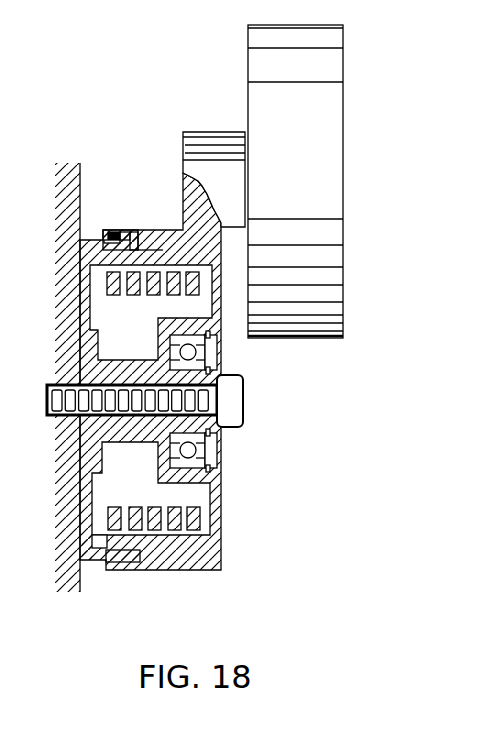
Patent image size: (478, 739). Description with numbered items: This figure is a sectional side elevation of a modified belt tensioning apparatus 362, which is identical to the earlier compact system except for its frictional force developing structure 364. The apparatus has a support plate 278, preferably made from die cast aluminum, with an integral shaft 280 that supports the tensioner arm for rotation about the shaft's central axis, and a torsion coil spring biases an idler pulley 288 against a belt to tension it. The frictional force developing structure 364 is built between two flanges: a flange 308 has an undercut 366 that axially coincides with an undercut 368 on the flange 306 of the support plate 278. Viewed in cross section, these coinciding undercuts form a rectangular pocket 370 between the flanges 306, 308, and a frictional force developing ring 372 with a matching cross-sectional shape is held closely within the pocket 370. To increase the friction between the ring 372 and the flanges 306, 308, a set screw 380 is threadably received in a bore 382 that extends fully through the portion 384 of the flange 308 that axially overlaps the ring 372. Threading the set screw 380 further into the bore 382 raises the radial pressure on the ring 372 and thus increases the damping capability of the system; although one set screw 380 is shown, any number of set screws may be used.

The support plate 278 is at (79, 460).
The shaft 280 is at (125, 378).
The idler pulley 288 is at (300, 194).
The flange 306 is at (123, 547).
The flange 308 is at (157, 560).
The belt tensioning apparatus 362 is at (313, 181).
The frictional force developing structure 364 is at (98, 200).
The undercut 366 is at (97, 563).
The undercut 368 is at (125, 231).
The rectangular pocket 370 is at (103, 257).
The frictional force developing ring 372 is at (135, 234).
The set screw 380 is at (102, 238).
The bore 382 is at (104, 232).
The portion of the flange 384 is at (122, 563).